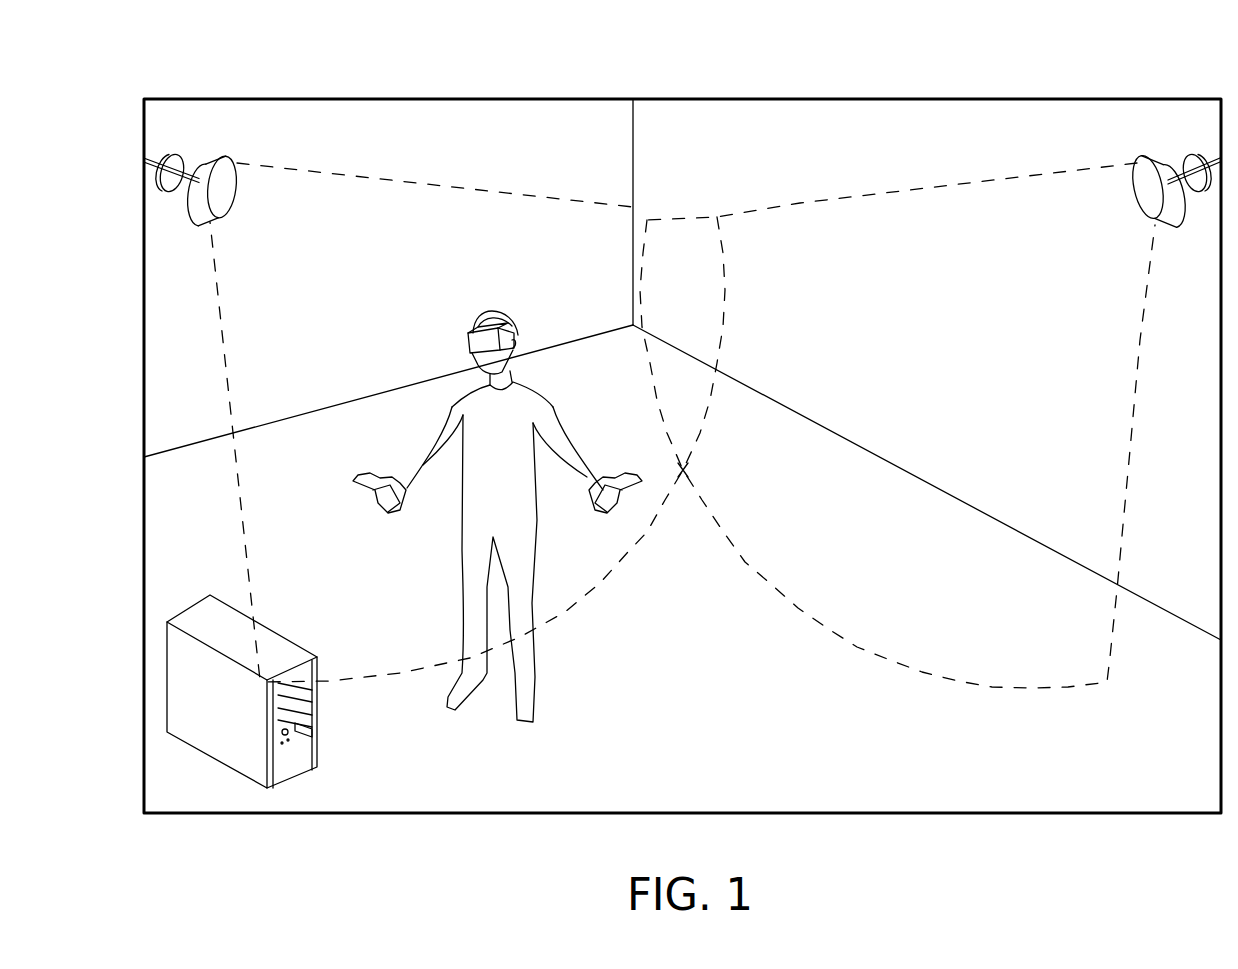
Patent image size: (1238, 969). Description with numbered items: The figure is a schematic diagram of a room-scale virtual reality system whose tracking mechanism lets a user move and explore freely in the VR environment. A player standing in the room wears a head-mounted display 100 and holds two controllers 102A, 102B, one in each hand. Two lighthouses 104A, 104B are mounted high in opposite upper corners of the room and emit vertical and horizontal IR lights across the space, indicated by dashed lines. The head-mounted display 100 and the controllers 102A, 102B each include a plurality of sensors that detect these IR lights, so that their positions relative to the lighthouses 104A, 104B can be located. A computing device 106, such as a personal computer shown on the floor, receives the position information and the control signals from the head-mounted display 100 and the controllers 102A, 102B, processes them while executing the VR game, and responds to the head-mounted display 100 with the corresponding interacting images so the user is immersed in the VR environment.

The head-mounted display 100 is at (470, 332).
The controller 102A is at (355, 487).
The controller 102B is at (625, 477).
The lighthouse 104A is at (1143, 167).
The lighthouse 104B is at (220, 167).
The computing device 106 is at (188, 680).